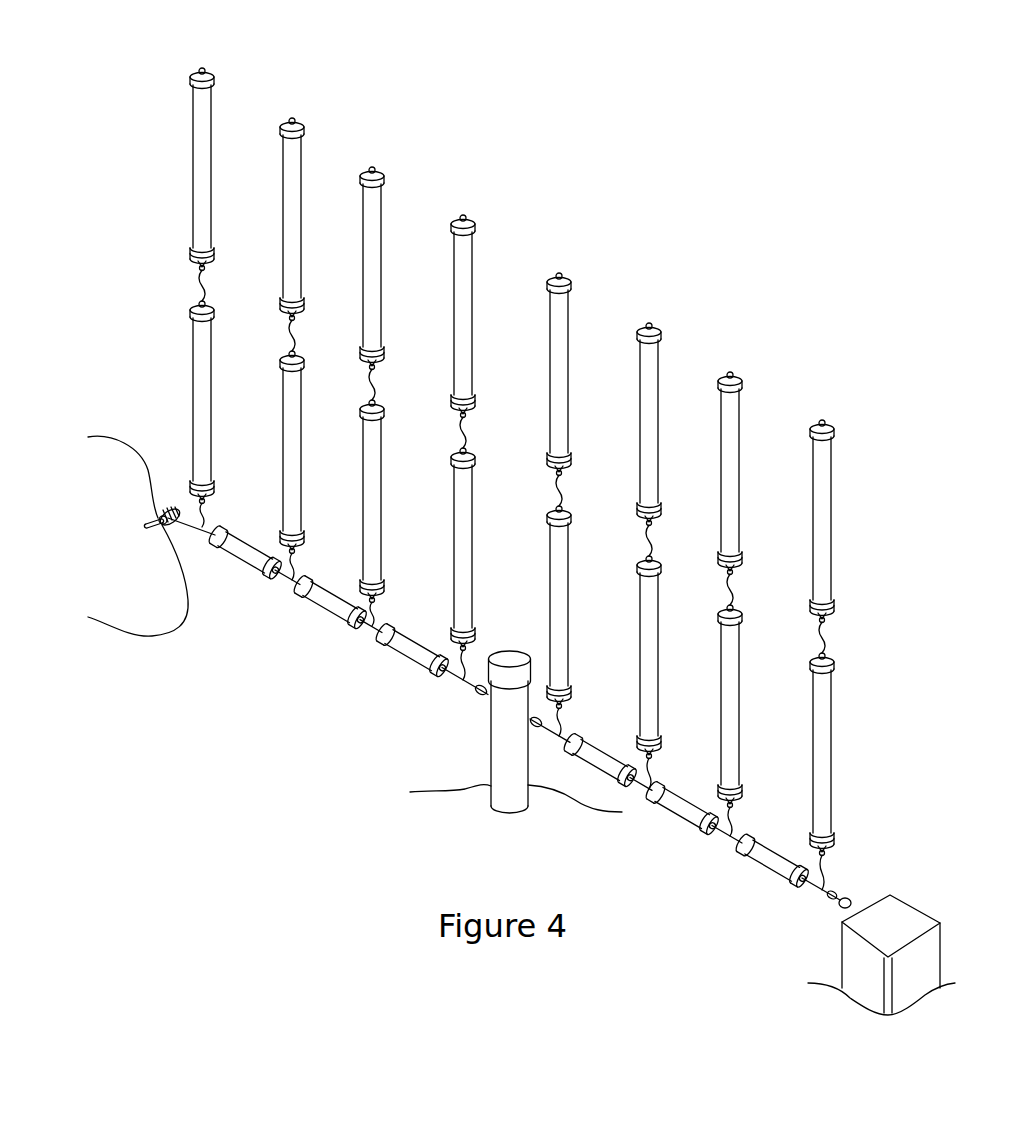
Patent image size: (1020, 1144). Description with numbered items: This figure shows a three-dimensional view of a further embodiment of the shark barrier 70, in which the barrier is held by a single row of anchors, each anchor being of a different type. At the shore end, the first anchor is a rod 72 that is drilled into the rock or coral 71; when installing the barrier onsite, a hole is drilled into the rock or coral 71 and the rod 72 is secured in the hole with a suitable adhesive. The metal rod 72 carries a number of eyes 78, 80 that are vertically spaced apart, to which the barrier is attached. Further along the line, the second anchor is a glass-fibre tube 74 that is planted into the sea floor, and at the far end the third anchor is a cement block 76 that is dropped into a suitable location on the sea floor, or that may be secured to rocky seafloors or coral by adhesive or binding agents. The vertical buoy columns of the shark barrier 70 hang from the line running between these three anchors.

The shark barrier 70 is at (146, 101).
The rock or coral 71 is at (138, 593).
The rod 72 is at (152, 522).
The glass-fibre tube 74 is at (497, 763).
The cement block 76 is at (906, 944).
The eye 78 is at (166, 509).
The eye 80 is at (166, 526).